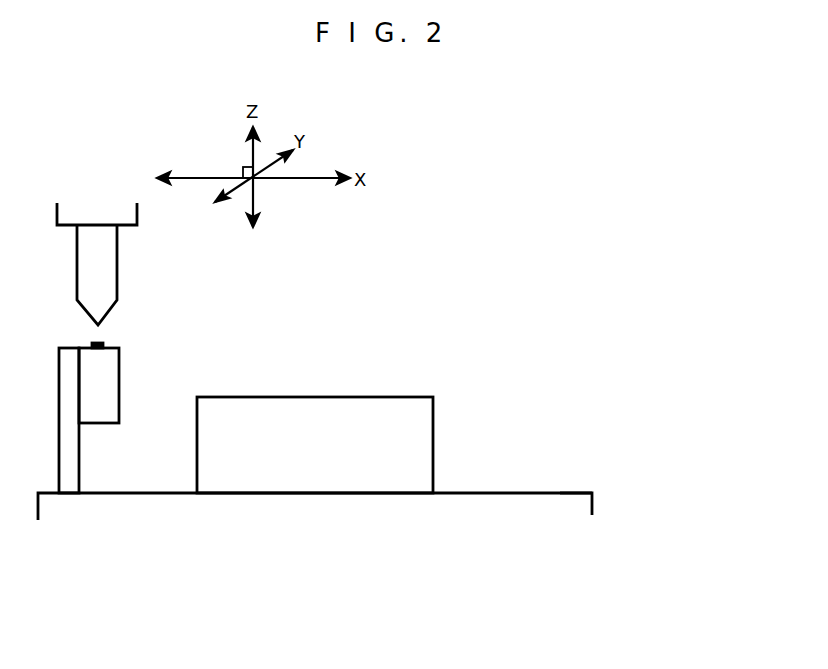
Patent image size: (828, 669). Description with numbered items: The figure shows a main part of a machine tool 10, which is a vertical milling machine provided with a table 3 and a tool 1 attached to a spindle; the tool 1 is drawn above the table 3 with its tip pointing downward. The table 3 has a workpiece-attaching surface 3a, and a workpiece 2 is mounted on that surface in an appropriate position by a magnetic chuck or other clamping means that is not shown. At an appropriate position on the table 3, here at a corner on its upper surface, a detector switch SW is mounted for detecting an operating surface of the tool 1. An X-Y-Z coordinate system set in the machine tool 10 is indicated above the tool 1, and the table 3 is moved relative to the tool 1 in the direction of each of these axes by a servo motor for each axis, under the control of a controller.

The tool 1 is at (117, 275).
The detector switch SW is at (119, 372).
The workpiece 2 is at (415, 397).
The table 3 is at (572, 508).
The workpiece-attaching surface 3a is at (575, 493).
The machine tool 10 is at (522, 312).